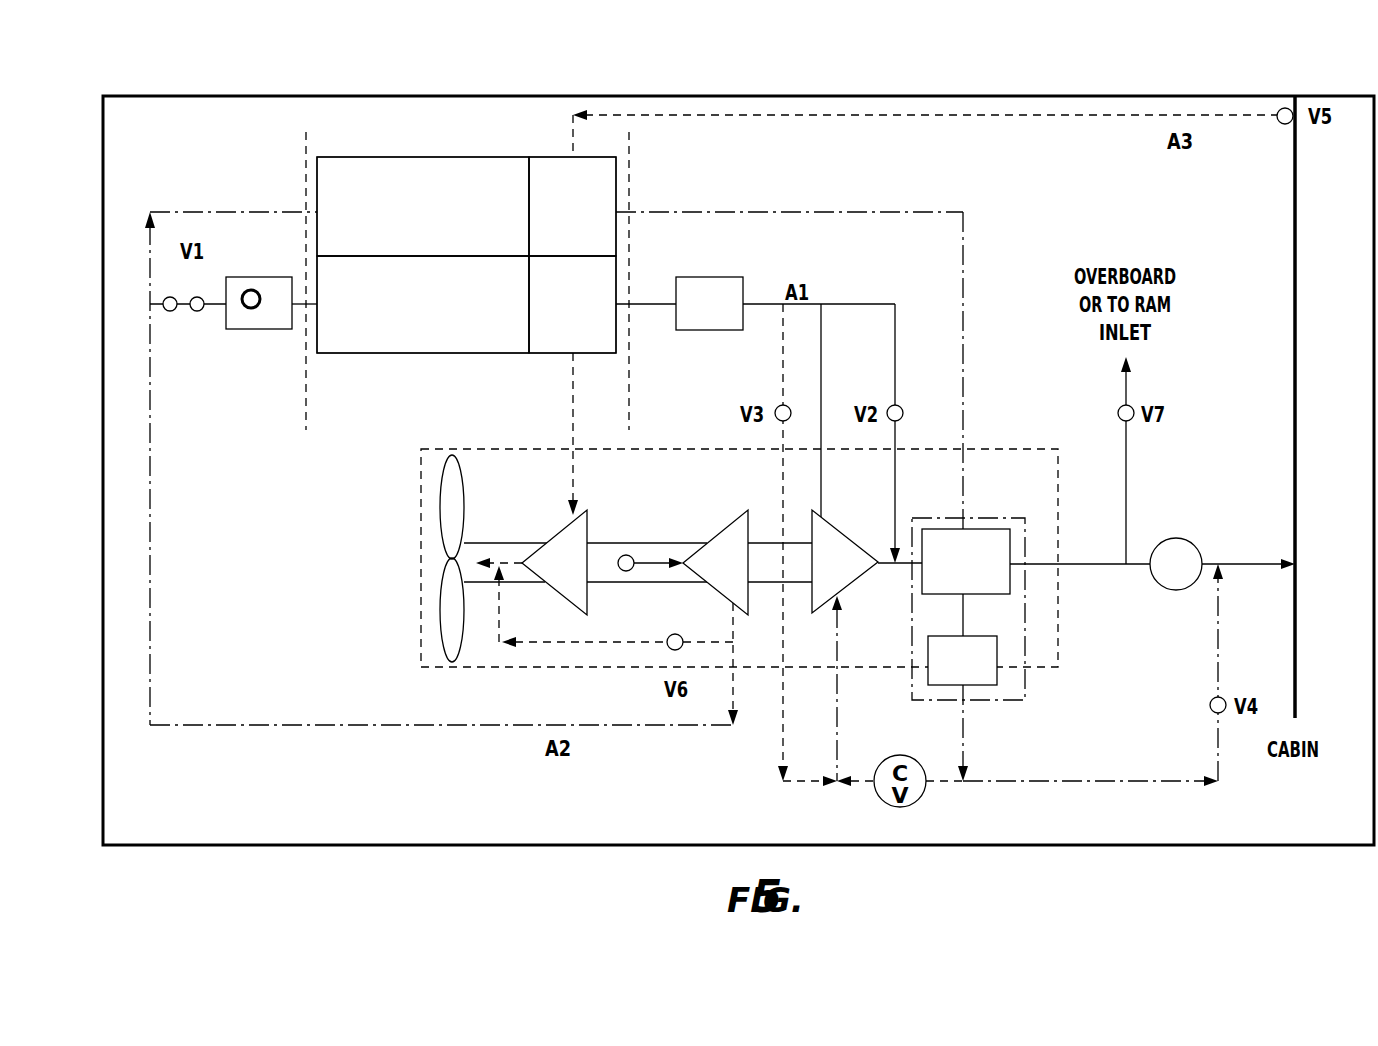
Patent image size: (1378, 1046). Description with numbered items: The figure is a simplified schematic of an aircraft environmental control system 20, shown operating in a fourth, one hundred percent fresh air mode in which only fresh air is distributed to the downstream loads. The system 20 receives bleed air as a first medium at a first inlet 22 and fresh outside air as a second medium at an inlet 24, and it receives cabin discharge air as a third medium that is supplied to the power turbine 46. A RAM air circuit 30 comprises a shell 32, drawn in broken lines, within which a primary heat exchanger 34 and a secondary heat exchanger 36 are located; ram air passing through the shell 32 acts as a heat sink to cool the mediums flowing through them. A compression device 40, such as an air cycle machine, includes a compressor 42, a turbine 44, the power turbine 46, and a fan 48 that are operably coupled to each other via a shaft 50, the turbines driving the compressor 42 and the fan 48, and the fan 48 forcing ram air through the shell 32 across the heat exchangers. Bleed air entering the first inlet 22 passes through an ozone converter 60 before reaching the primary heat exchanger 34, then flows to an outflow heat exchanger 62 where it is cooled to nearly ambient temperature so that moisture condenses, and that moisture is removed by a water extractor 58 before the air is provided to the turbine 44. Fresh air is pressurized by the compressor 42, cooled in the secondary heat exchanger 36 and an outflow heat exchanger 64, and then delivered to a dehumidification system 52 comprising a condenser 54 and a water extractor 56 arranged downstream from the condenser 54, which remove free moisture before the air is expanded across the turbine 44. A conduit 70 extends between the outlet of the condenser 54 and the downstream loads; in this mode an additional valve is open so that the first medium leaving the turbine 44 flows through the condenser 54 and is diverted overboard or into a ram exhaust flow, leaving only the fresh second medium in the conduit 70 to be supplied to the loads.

The environmental control system 20 is at (245, 63).
The first inlet 22 is at (150, 304).
The inlet 24 is at (629, 555).
The RAM air circuit 30 is at (305, 162).
The shell 32 is at (305, 197).
The primary heat exchanger 34 is at (497, 353).
The secondary heat exchanger 36 is at (497, 157).
The compression device 40 is at (1035, 445).
The compressor 42 is at (720, 600).
The turbine 44 is at (838, 528).
The power turbine 46 is at (557, 530).
The fan 48 is at (440, 605).
The shaft 50 is at (607, 565).
The dehumidification system 52 is at (1030, 690).
The condenser 54 is at (1010, 545).
The water extractor 56 is at (985, 685).
The water extractor 58 is at (730, 277).
The ozone converter 60 is at (245, 329).
The outflow heat exchanger 62 is at (616, 270).
The outflow heat exchanger 64 is at (616, 167).
The conduit 70 is at (1253, 562).